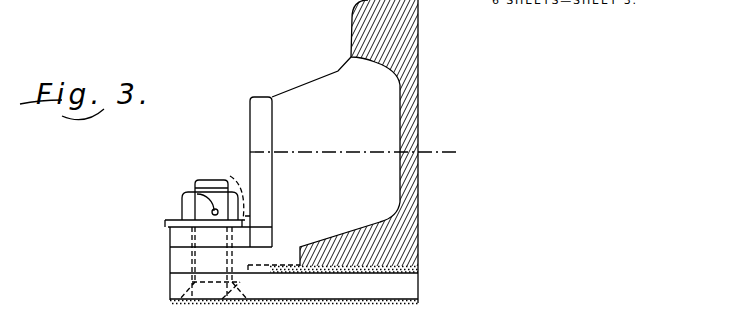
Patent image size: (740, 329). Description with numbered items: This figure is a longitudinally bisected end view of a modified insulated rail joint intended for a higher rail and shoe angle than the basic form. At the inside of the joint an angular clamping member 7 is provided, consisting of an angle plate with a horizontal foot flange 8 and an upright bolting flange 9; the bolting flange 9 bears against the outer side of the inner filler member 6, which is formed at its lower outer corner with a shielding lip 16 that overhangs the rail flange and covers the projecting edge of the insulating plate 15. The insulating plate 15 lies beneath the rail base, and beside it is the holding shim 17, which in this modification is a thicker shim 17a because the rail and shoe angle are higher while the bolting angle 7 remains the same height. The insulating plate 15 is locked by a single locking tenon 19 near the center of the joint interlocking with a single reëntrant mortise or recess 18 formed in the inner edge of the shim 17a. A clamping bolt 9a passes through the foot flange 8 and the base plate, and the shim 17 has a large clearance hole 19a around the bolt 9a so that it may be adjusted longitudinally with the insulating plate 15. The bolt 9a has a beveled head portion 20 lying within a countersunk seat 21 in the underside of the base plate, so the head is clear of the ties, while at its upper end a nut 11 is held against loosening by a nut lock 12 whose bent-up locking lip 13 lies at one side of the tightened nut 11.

The inner filler member 6 is at (337, 75).
The angular clamping member 7 is at (250, 242).
The horizontal foot flange 8 is at (180, 235).
The upright bolting flange 9 is at (258, 100).
The clamping bolt 9a is at (198, 188).
The nut 11 is at (183, 204).
The nut lock 12 is at (165, 219).
The bent-up locking lip 13 is at (197, 191).
The insulating plate 15 is at (420, 266).
The shielding lips 16 is at (331, 234).
The holding shim 17 is at (355, 15).
The thicker shim 17a is at (180, 263).
The reëntrant mortise or recess 18 is at (226, 306).
The locking tenon 19 is at (265, 275).
The clearance hole 19a is at (230, 189).
The beveled head portions 20 is at (180, 295).
The countersunk seats 21 is at (186, 306).